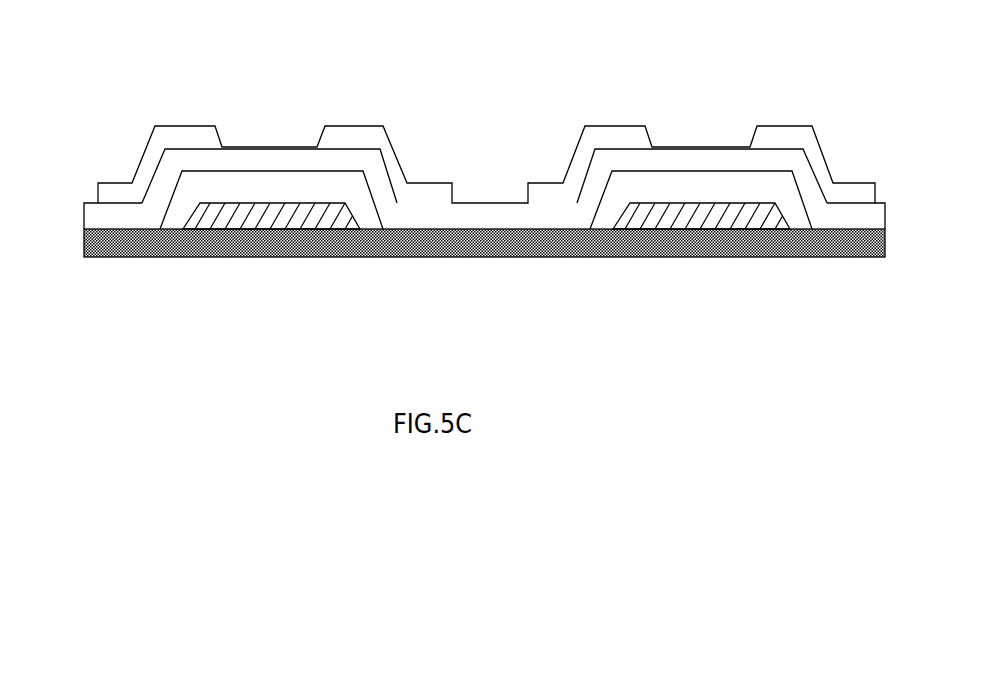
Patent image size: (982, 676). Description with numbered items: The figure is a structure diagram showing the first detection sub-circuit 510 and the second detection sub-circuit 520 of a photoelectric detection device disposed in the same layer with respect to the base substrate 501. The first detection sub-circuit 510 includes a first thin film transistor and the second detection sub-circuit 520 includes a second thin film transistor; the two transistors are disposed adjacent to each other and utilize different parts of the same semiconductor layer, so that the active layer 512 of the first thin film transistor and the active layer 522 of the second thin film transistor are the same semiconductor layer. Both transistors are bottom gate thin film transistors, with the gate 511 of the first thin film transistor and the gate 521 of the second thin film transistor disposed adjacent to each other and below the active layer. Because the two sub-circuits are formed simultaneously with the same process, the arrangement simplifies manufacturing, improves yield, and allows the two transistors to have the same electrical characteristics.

The base substrate 501 is at (83, 254).
The first detection sub-circuit 510 is at (117, 127).
The gate 511 is at (255, 207).
The active layer 512 is at (138, 216).
The second detection sub-circuit 520 is at (813, 108).
The gate 521 is at (692, 213).
The active layer 522 is at (838, 216).